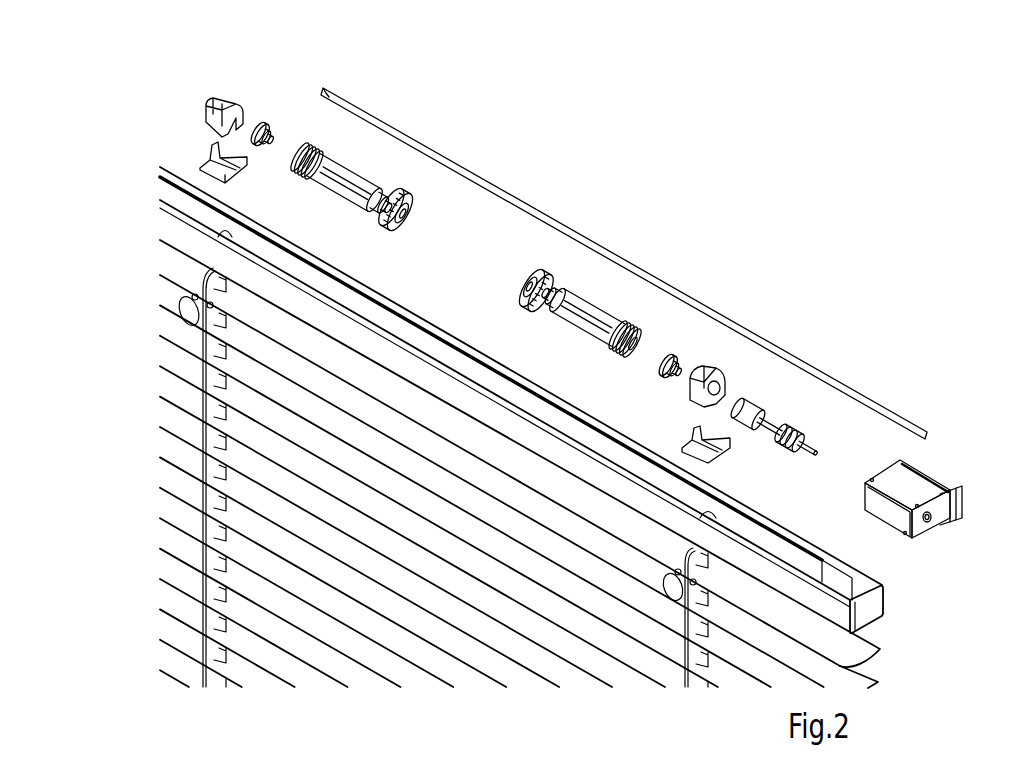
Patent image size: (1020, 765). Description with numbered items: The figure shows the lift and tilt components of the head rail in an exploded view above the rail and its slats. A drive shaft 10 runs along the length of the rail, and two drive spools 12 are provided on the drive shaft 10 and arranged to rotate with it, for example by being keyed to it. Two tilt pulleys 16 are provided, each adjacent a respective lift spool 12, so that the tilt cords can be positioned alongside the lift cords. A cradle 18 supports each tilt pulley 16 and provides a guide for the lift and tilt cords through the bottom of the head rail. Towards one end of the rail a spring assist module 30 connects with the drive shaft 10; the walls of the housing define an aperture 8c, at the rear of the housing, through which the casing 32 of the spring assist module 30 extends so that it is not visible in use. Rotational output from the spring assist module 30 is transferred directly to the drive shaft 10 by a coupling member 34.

The aperture 8c is at (833, 573).
The drive shaft 10 is at (471, 170).
The drive spool 12 is at (338, 163).
The tilt pulley 16 is at (258, 118).
The cradle 18 is at (215, 97).
The spring assist module 30 is at (921, 448).
The casing 32 is at (900, 482).
The coupling member 34 is at (780, 417).